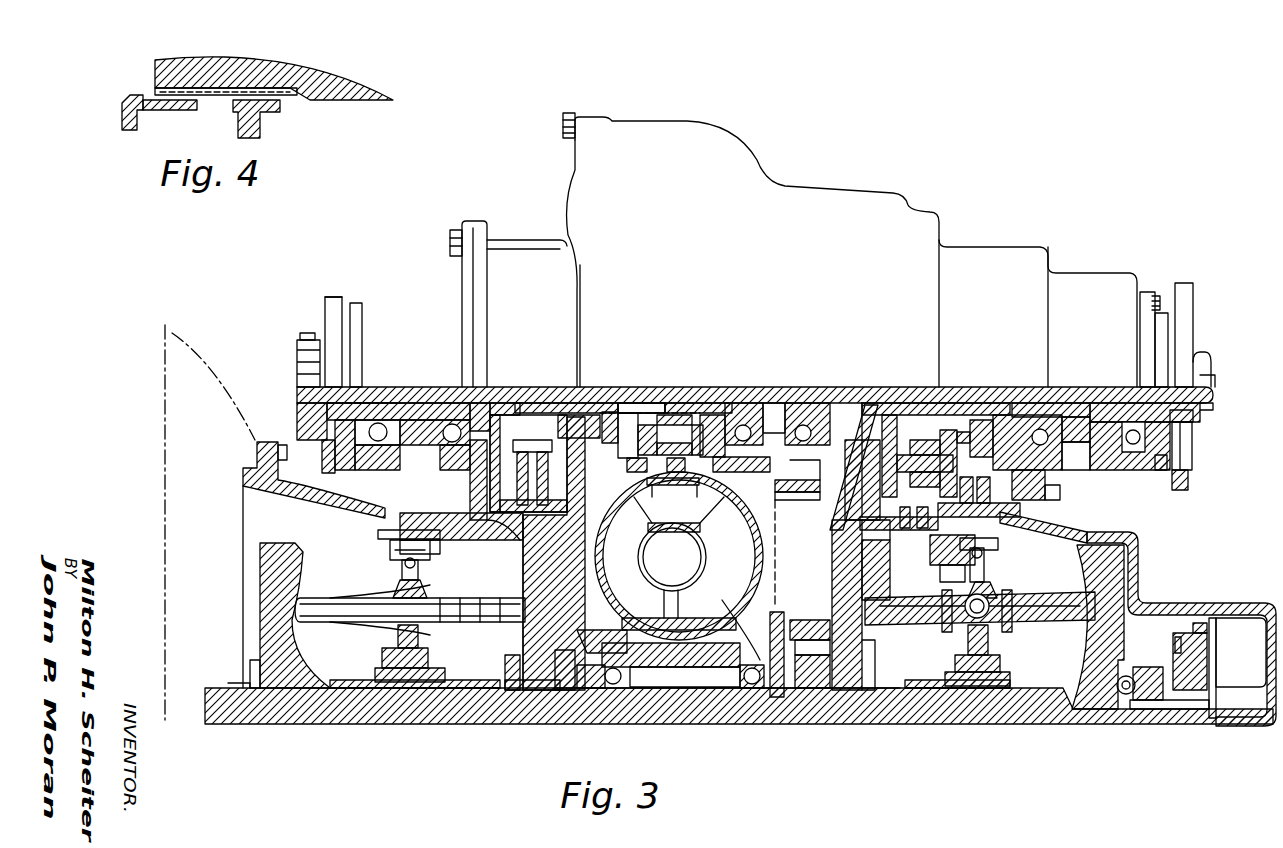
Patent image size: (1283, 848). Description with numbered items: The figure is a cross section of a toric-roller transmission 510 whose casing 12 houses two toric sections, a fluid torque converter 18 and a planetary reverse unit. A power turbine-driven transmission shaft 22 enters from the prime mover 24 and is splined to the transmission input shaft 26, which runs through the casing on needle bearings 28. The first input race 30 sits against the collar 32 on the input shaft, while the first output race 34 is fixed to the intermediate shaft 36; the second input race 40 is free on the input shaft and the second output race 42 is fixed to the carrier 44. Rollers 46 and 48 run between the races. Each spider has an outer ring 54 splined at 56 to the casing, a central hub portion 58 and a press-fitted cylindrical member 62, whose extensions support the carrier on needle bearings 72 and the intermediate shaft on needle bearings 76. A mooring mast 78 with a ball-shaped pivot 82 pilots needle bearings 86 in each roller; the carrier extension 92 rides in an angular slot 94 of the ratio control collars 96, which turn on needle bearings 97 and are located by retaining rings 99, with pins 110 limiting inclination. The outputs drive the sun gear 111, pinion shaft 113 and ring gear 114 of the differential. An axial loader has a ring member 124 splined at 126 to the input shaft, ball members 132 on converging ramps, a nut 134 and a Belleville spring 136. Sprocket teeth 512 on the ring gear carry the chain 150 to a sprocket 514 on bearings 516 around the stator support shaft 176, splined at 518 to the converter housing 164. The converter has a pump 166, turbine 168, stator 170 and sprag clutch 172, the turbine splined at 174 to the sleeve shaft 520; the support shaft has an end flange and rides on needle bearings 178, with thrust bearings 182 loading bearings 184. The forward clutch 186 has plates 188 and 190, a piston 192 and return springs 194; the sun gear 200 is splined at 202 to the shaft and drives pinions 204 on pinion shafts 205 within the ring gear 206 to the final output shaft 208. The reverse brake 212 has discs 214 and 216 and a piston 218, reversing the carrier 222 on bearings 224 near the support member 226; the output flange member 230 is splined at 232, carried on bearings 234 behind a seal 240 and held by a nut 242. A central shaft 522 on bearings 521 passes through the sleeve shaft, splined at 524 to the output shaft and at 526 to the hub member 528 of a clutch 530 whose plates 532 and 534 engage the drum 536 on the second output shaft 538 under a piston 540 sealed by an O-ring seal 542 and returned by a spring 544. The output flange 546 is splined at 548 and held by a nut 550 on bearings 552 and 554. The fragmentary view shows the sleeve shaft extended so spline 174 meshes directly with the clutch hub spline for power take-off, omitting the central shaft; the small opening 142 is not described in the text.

In FIG. 3, the casing 12 is at (653, 135).
In FIG. 3, the fluid torque converter 18 is at (777, 585).
In FIG. 3, the power turbine-driven transmission shaft 22 is at (250, 705).
In FIG. 3, the prime mover 24 is at (180, 422).
In FIG. 3, the transmission input shaft 26 is at (610, 700).
In FIG. 3, the needle bearings 28 is at (385, 690).
In FIG. 3, the first input race 30 is at (270, 581).
In FIG. 3, the collar 32 is at (257, 668).
In FIG. 3, the first output race 34 is at (545, 618).
In FIG. 3, the intermediate shaft 36 is at (562, 690).
In FIG. 3, the second input race 40 is at (1125, 588).
In FIG. 3, the second output race 42 is at (862, 667).
In FIG. 3, the carrier 44 is at (870, 696).
In FIG. 3, the roller member 46 is at (312, 606).
In FIG. 3, the roller member 48 is at (1095, 620).
In FIG. 3, the outer ring 54 is at (438, 540).
In FIG. 3, the splines 56 is at (405, 530).
In FIG. 3, the central hub portion 58 is at (382, 661).
In FIG. 3, the cylindrical member 62 is at (462, 690).
In FIG. 3, the needle bearings 72 is at (850, 692).
In FIG. 3, the needle bearings 76 is at (520, 674).
In FIG. 3, the pin or mooring mast 78 is at (400, 639).
In FIG. 3, the ball-shaped pivot 82 is at (965, 607).
In FIG. 3, the needle bearings 86 is at (1008, 622).
In FIG. 3, the extension 92 is at (395, 590).
In FIG. 3, the angular groove or slot 94 is at (402, 564).
In FIG. 3, the ratio control collars 96 is at (390, 551).
In FIG. 3, the needle bearings 97 is at (965, 576).
In FIG. 3, the retaining rings 99 is at (378, 534).
In FIG. 3, the pins 110 is at (930, 624).
In FIG. 3, the sun gear 111 is at (795, 692).
In FIG. 3, the pinion shaft 113 is at (772, 692).
In FIG. 3, the ring gear 114 is at (920, 614).
In FIG. 3, the ring member 124 is at (1180, 705).
In FIG. 3, the splines 126 is at (1140, 708).
In FIG. 3, the ball members 132 is at (1120, 695).
In FIG. 3, the nut 134 is at (1214, 700).
In FIG. 3, the Belleville spring 136 is at (1150, 672).
In FIG. 3, the mounting block 142 is at (820, 692).
In FIG. 3, the chain 150 is at (773, 527).
In FIG. 3, the converter housing 164 is at (705, 682).
In FIG. 3, the pump 166 is at (750, 535).
In FIG. 4, the turbine 168 is at (262, 127).
In FIG. 3, the turbine 168 is at (596, 572).
In FIG. 3, the stator 170 is at (672, 570).
In FIG. 3, the sprag clutch 172 is at (675, 458).
In FIG. 4, the spline 174 is at (205, 90).
In FIG. 3, the spline 174 is at (620, 410).
In FIG. 3, the stator and sprag clutch support shaft 176 is at (800, 430).
In FIG. 3, the needle bearings 178 is at (735, 405).
In FIG. 3, the thrust bearings 182 is at (633, 455).
In FIG. 3, the bearings 184 is at (888, 420).
In FIG. 3, the clutch 186 is at (1050, 482).
In FIG. 3, the discs or plates 188 is at (1040, 447).
In FIG. 3, the discs or plates 190 is at (975, 503).
In FIG. 3, the piston 192 is at (1045, 497).
In FIG. 3, the return springs 194 is at (1000, 430).
In FIG. 3, the sun gear 200 is at (935, 410).
In FIG. 3, the splines 202 is at (900, 415).
In FIG. 3, the pinions 204 is at (938, 430).
In FIG. 3, the pinion shafts 205 is at (848, 490).
In FIG. 3, the ring gear 206 is at (945, 540).
In FIG. 3, the final output shaft 208 is at (1060, 390).
In FIG. 3, the reverse brake 212 is at (868, 492).
In FIG. 3, the discs 214 is at (870, 520).
In FIG. 3, the discs 216 is at (845, 520).
In FIG. 3, the piston 218 is at (862, 482).
In FIG. 3, the carrier 222 is at (940, 455).
In FIG. 3, the bearings 224 is at (1085, 415).
In FIG. 3, the support member 226 is at (1130, 470).
In FIG. 3, the output flange member 230 is at (1192, 456).
In FIG. 3, the splines 232 is at (1110, 395).
In FIG. 3, the bearings 234 is at (1165, 470).
In FIG. 3, the seal 240 is at (1193, 424).
In FIG. 3, the nut 242 is at (1210, 406).
In FIG. 3, the transmission embodiment 510 is at (322, 280).
In FIG. 3, the sprocket teeth 512 is at (775, 612).
In FIG. 3, the sprocket 514 is at (815, 400).
In FIG. 3, the bearings 516 is at (745, 425).
In FIG. 3, the splines 518 is at (790, 410).
In FIG. 4, the sleeve shaft 520 is at (345, 86).
In FIG. 3, the sleeve shaft 520 is at (877, 395).
In FIG. 3, the bearings 521 is at (660, 425).
In FIG. 3, the central shaft 522 is at (698, 390).
In FIG. 3, the splines 524 is at (1012, 440).
In FIG. 4, the splines 526 is at (152, 92).
In FIG. 3, the splines 526 is at (580, 408).
In FIG. 4, the hub member 528 is at (125, 100).
In FIG. 3, the hub member 528 is at (560, 405).
In FIG. 3, the clutch 530 is at (528, 384).
In FIG. 3, the discs or plates 532 is at (545, 412).
In FIG. 3, the discs or plates 534 is at (525, 530).
In FIG. 3, the drum 536 is at (500, 520).
In FIG. 3, the second output shaft 538 is at (398, 392).
In FIG. 3, the piston 540 is at (487, 470).
In FIG. 3, the O-ring seal 542 is at (480, 405).
In FIG. 3, the return spring 544 is at (497, 405).
In FIG. 3, the output flange 546 is at (322, 483).
In FIG. 3, the splines 548 is at (330, 404).
In FIG. 3, the nut 550 is at (305, 413).
In FIG. 3, the bearings 552 is at (455, 445).
In FIG. 3, the bearings 554 is at (375, 422).